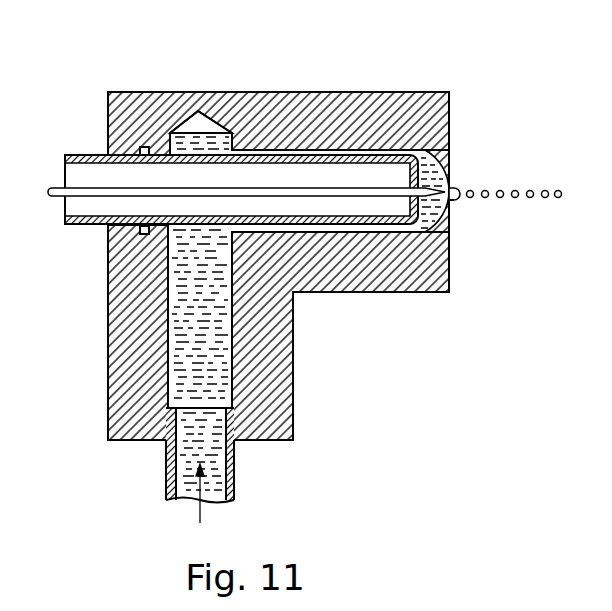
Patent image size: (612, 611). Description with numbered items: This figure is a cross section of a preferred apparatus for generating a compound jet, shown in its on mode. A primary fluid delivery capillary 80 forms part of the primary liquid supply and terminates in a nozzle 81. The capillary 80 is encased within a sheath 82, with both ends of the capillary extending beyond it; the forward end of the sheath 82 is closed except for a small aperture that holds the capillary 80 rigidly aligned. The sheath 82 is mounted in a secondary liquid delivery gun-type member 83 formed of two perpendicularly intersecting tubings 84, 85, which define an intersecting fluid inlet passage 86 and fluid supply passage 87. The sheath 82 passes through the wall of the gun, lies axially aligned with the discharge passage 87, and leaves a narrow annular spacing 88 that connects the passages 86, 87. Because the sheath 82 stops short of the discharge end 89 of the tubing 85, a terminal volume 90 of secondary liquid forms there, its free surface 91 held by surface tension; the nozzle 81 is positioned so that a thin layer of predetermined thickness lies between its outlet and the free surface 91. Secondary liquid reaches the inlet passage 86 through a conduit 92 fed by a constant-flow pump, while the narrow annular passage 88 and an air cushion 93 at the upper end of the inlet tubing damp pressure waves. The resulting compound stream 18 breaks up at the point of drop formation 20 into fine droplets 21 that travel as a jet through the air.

The compound stream 18 is at (452, 199).
The point of drop formation 20 is at (455, 190).
The fine droplets 21 is at (517, 188).
The primary fluid delivery capillary 80 is at (332, 190).
The nozzle 81 is at (425, 222).
The sheath 82 is at (265, 157).
The secondary liquid delivery gun-type member 83 is at (108, 287).
The inlet tubing 84 is at (270, 392).
The tubing 85 is at (228, 103).
The fluid inlet passage 86 is at (197, 343).
The fluid supply passage 87 is at (437, 232).
The narrow annular spacing 88 is at (363, 230).
The discharge end 89 is at (447, 150).
The terminal volume 90 is at (427, 157).
The free surface 91 is at (450, 222).
The conduit 92 is at (234, 482).
The air cushion 93 is at (198, 111).